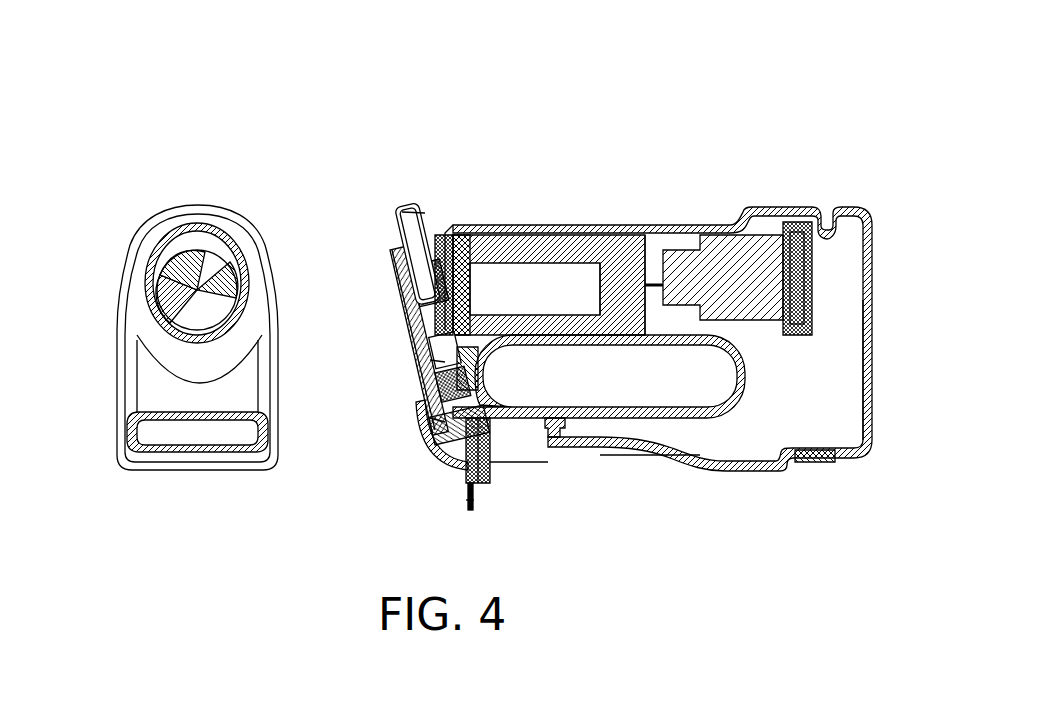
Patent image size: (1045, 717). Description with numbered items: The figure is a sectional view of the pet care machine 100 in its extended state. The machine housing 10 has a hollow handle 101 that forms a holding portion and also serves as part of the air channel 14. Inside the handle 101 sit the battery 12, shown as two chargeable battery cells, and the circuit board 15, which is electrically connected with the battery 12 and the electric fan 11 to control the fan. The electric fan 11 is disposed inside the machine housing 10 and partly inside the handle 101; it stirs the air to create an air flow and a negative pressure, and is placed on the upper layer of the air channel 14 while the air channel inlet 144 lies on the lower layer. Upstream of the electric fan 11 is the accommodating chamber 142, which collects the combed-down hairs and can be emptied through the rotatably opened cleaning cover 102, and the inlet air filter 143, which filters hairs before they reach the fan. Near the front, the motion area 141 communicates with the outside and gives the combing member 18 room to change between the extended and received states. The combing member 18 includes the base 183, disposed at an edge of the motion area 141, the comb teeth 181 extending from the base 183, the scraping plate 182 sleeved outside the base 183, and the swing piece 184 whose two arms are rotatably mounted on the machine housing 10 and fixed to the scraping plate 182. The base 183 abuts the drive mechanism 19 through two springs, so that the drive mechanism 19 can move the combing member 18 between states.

The pet care machine 100 is at (168, 140).
The machine housing 10 is at (268, 378).
The handle 101 is at (228, 237).
The cleaning cover 102 is at (868, 350).
The electric fan 11 is at (737, 262).
The battery 12 is at (232, 268).
The air channel 14 is at (764, 447).
The motion area 141 is at (510, 455).
The accommodating chamber 142 is at (837, 405).
The inlet air filter 143 is at (820, 298).
The air channel inlet 144 is at (565, 448).
The circuit board 15 is at (530, 285).
The combing member 18 is at (320, 488).
The comb teeth 181 is at (466, 504).
The scraping plate 182 is at (462, 478).
The base 183 is at (488, 486).
The swing piece 184 is at (430, 437).
The drive mechanism 19 is at (412, 353).